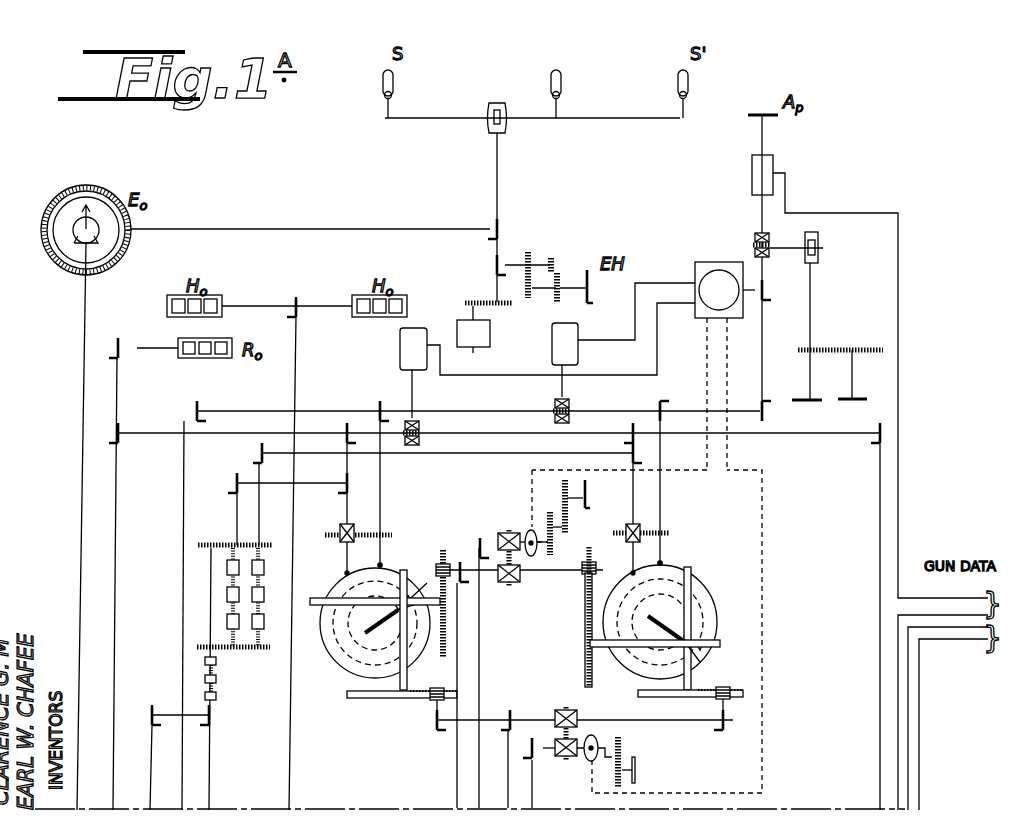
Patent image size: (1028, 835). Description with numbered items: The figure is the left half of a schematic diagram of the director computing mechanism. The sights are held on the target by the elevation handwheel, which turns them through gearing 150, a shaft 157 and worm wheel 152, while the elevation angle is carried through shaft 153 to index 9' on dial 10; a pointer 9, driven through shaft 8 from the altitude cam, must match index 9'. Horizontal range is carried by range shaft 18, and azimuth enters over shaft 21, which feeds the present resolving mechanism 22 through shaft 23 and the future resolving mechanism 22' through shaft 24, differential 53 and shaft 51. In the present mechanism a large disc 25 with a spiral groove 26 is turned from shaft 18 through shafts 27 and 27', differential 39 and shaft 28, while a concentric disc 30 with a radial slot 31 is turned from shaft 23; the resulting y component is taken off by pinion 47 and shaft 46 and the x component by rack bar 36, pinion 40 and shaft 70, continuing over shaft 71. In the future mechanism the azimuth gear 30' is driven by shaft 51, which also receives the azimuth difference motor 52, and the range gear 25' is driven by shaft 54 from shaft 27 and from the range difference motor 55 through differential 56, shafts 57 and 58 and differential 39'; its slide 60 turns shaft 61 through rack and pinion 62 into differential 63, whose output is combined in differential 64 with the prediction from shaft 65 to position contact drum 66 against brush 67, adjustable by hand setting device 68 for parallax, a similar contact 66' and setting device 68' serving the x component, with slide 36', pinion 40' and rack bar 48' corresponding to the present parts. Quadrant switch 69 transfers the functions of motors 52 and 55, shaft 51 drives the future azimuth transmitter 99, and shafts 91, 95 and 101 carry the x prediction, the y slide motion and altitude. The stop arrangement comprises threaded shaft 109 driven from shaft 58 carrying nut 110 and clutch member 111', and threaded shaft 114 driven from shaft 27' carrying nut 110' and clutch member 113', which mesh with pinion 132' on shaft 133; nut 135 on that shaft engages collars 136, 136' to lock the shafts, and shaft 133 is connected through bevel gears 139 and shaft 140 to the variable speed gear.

The shaft 8 is at (77, 540).
The pointer 9 is at (78, 224).
The index 9' is at (77, 215).
The dial 10 is at (42, 240).
The range shaft 18 is at (117, 620).
The shaft 21 is at (183, 790).
The present resolving mechanism 22 is at (375, 610).
The future resolving mechanism 22' is at (660, 610).
The shaft 23 is at (382, 478).
The present azimuth bearing shaft 24 is at (460, 411).
The disc or gear 25 is at (356, 623).
The range gear 25' is at (681, 617).
The spiral groove 26 is at (348, 660).
The shaft 27 is at (494, 444).
The shaft 27' is at (327, 509).
The shaft 28 is at (345, 552).
The disc or gear 30 is at (423, 630).
The azimuth gear 30' is at (699, 628).
The radial slot 31 is at (382, 608).
The rack bar 36 is at (402, 712).
The slide 36' is at (666, 672).
The differential 39 is at (347, 545).
The differential 39' is at (634, 509).
The pinion 40 is at (421, 716).
The nut 40' is at (731, 692).
The shaft 46 is at (526, 685).
The pinion 47 is at (450, 556).
The cross bar 48' is at (366, 616).
The shaft 51 is at (647, 631).
The azimuth difference motor 52 is at (578, 327).
The differential 53 is at (580, 405).
The shaft 54 is at (633, 558).
The range difference motor 55 is at (400, 356).
The differential 56 is at (426, 430).
The shaft 57 is at (503, 433).
The shaft 58 is at (468, 453).
The vertically movable slide 60 is at (587, 665).
The shaft 61 is at (573, 617).
The rack and pinion 62 is at (586, 560).
The differential 63 is at (507, 586).
The differential 64 is at (497, 532).
The shaft 65 is at (481, 666).
The zero reading contact drum 66 is at (547, 522).
The contact mechanism 66' is at (588, 733).
The brush 67 is at (529, 532).
The hand setting device 68 is at (588, 498).
The hand setting device 68' is at (644, 764).
The quadrant switch 69 is at (718, 278).
The shaft 70 is at (489, 719).
The shaft 71 is at (509, 758).
The shaft 91 is at (533, 795).
The shaft 95 is at (456, 781).
The transmitter 99 is at (778, 158).
The shaft 101 is at (291, 769).
The threaded shaft 109 is at (258, 505).
The nut 110 is at (278, 597).
The traveling nut 110' is at (212, 597).
The clutch member 111' is at (281, 504).
The clutch member 113' is at (257, 529).
The threaded shaft 114 is at (233, 497).
The pinion 132' is at (232, 581).
The shaft 133 is at (209, 592).
The nut 135 is at (217, 681).
The collar 136 is at (233, 663).
The collar 136' is at (210, 708).
The bevel gears 139 is at (150, 712).
The shaft 140 is at (151, 763).
The gearing 150 is at (546, 268).
The worm wheel 152 is at (492, 104).
The shaft 153 is at (310, 213).
The shaft 157 is at (500, 173).